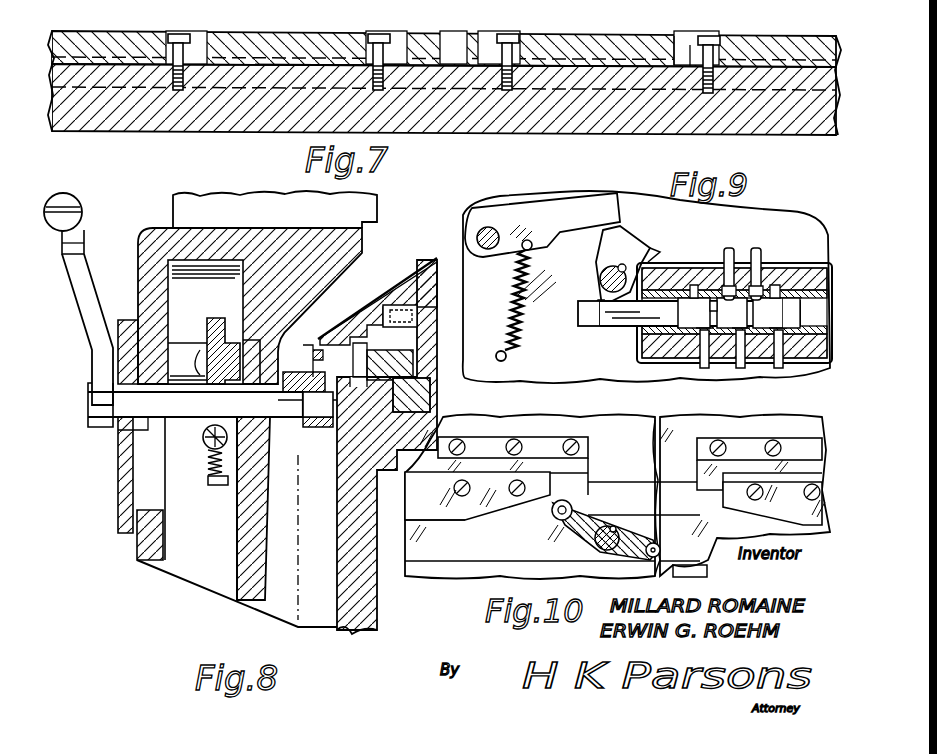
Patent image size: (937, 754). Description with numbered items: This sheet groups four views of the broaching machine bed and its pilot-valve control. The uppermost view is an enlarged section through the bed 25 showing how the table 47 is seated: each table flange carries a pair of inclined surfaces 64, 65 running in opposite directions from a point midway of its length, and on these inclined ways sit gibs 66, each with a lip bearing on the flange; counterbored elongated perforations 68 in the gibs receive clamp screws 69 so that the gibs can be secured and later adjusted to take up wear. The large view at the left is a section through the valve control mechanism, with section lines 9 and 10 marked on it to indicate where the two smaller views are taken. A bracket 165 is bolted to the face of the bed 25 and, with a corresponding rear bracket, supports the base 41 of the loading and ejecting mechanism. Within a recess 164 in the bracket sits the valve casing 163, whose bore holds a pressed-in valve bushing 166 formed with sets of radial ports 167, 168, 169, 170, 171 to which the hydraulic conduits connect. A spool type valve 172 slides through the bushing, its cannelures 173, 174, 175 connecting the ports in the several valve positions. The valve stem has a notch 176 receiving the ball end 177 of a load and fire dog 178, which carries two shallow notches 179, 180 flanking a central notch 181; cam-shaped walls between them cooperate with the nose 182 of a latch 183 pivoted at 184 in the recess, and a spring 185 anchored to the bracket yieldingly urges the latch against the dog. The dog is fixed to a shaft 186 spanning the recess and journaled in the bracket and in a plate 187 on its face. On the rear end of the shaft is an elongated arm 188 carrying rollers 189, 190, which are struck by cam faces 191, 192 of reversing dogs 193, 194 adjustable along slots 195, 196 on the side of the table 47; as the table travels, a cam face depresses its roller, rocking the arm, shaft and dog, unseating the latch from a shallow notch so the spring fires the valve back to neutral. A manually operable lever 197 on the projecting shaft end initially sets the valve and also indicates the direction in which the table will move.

In FIG. 7, the bed 25 is at (187, 125).
In FIG. 7, the inclined surface 64 is at (448, 42).
In FIG. 7, the inclined surface 65 is at (352, 50).
In FIG. 7, the gib 66 is at (586, 45).
In FIG. 7, the counterbored elongated perforation 68 is at (680, 48).
In FIG. 7, the clamp screw 69 is at (712, 50).
In FIG. 8, the section line 9— 9 is at (225, 303).
In FIG. 8, the section line 10— 10 is at (317, 336).
In FIG. 8, the base of loading and ejecting mechanism 41 is at (378, 220).
In FIG. 10, the table 47 is at (590, 425).
In FIG. 9, the valve casing 163 is at (650, 345).
In FIG. 8, the recess 164 is at (178, 570).
In FIG. 9, the recess 164 is at (672, 364).
In FIG. 8, the bracket 165 is at (355, 268).
In FIG. 9, the bracket 165 is at (513, 370).
In FIG. 9, the valve bushing 166 is at (795, 365).
In FIG. 9, the radial ports 167 is at (790, 300).
In FIG. 9, the radial ports 168 is at (760, 300).
In FIG. 9, the radial ports 169 is at (756, 250).
In FIG. 9, the radial ports 170 is at (729, 250).
In FIG. 9, the radial ports 171 is at (712, 300).
In FIG. 9, the spool type valve 172 is at (630, 314).
In FIG. 9, the cannelure 173 is at (788, 298).
In FIG. 9, the cannelure 174 is at (718, 352).
In FIG. 9, the cannelure 175 is at (672, 275).
In FIG. 9, the notch 176 is at (584, 326).
In FIG. 9, the ball end 177 is at (597, 303).
In FIG. 8, the load and fire dog 178 is at (206, 340).
In FIG. 9, the load and fire dog 178 is at (622, 238).
In FIG. 9, the shallow notch 179 is at (598, 262).
In FIG. 9, the shallow notch 180 is at (656, 252).
In FIG. 9, the notch 181 is at (634, 246).
In FIG. 9, the nose 182 is at (618, 232).
In FIG. 8, the latch 183 is at (205, 326).
In FIG. 9, the latch 183 is at (540, 215).
In FIG. 9, the pivot 184 is at (490, 228).
In FIG. 8, the spring 185 is at (206, 466).
In FIG. 9, the spring 185 is at (505, 306).
In FIG. 8, the shaft 186 is at (200, 418).
In FIG. 9, the shaft 186 is at (600, 275).
In FIG. 8, the plate 187 is at (122, 459).
In FIG. 8, the elongated arm 188 is at (328, 432).
In FIG. 10, the elongated arm 188 is at (622, 532).
In FIG. 10, the roller 189 is at (555, 518).
In FIG. 10, the roller 190 is at (627, 534).
In FIG. 10, the cam face 191 is at (483, 520).
In FIG. 10, the cam face 192 is at (768, 510).
In FIG. 10, the reversing dog 193 is at (440, 510).
In FIG. 10, the reversing dog 194 is at (800, 512).
In FIG. 8, the slot 195 is at (358, 327).
In FIG. 10, the slot 195 is at (577, 492).
In FIG. 10, the slot 196 is at (697, 483).
In FIG. 8, the manually operable lever 197 is at (92, 300).